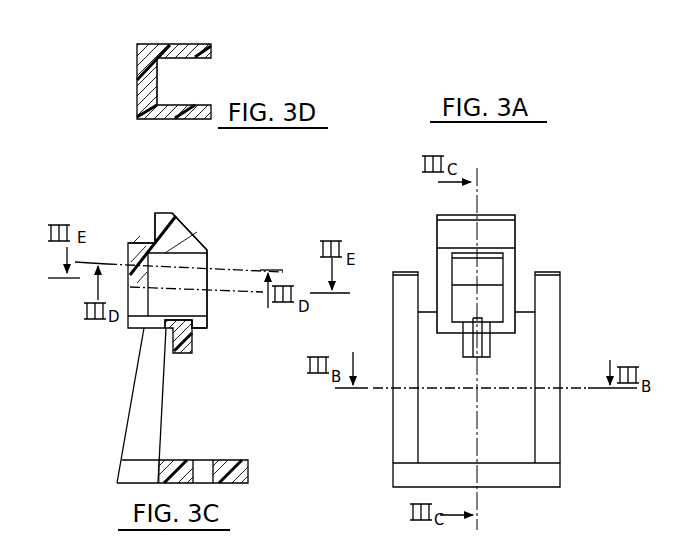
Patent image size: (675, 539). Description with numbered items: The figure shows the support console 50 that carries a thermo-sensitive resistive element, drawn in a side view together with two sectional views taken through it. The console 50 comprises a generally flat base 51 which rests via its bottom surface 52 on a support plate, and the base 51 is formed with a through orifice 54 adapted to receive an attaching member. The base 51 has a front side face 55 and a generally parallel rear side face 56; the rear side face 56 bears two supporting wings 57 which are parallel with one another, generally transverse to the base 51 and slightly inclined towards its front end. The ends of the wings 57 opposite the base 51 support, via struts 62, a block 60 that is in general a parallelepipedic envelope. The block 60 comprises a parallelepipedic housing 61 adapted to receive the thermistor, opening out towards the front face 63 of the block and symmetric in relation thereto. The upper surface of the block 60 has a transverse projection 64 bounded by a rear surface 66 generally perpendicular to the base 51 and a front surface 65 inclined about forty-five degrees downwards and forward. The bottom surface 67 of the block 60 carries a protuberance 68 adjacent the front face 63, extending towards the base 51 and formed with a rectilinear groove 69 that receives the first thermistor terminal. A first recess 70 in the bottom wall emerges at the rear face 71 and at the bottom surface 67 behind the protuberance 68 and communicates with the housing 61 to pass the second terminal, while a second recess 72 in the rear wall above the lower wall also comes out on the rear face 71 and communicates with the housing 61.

In FIG. 3D, the support console 50 is at (164, 43).
In FIG. 3C, the support console 50 is at (248, 261).
In FIG. 3A, the support console 50 is at (524, 254).
In FIG. 3C, the base 51 is at (178, 472).
In FIG. 3C, the bottom surface 52 is at (131, 486).
In FIG. 3C, the through orifice 54 is at (205, 468).
In FIG. 3C, the front side face 55 is at (253, 471).
In FIG. 3A, the front side face 55 is at (540, 477).
In FIG. 3C, the rear side face 56 is at (147, 472).
In FIG. 3C, the supporting wings 57 is at (143, 415).
In FIG. 3A, the supporting wings 57 is at (407, 443).
In FIG. 3D, the block 60 is at (130, 80).
In FIG. 3C, the block 60 is at (146, 240).
In FIG. 3A, the block 60 is at (429, 207).
In FIG. 3D, the housing 61 is at (193, 85).
In FIG. 3C, the housing 61 is at (191, 280).
In FIG. 3A, the housing 61 is at (466, 296).
In FIG. 3A, the struts 62 is at (428, 293).
In FIG. 3D, the front face 63 is at (216, 50).
In FIG. 3C, the front face 63 is at (209, 323).
In FIG. 3A, the front face 63 is at (507, 262).
In FIG. 3C, the transverse projection 64 is at (164, 217).
In FIG. 3C, the front surface 65 is at (194, 227).
In FIG. 3A, the front surface 65 is at (495, 230).
In FIG. 3C, the rear surface 66 is at (156, 221).
In FIG. 3C, the bottom surface 67 is at (135, 335).
In FIG. 3C, the protuberance 68 is at (197, 343).
In FIG. 3A, the protuberance 68 is at (454, 344).
In FIG. 3A, the rectilinear groove 69 is at (482, 347).
In FIG. 3C, the first recess 70 is at (134, 322).
In FIG. 3D, the rear face 71 is at (133, 107).
In FIG. 3C, the rear face 71 is at (127, 247).
In FIG. 3C, the second recess 72 is at (138, 300).
In FIG. 3A, the second recess 72 is at (492, 298).